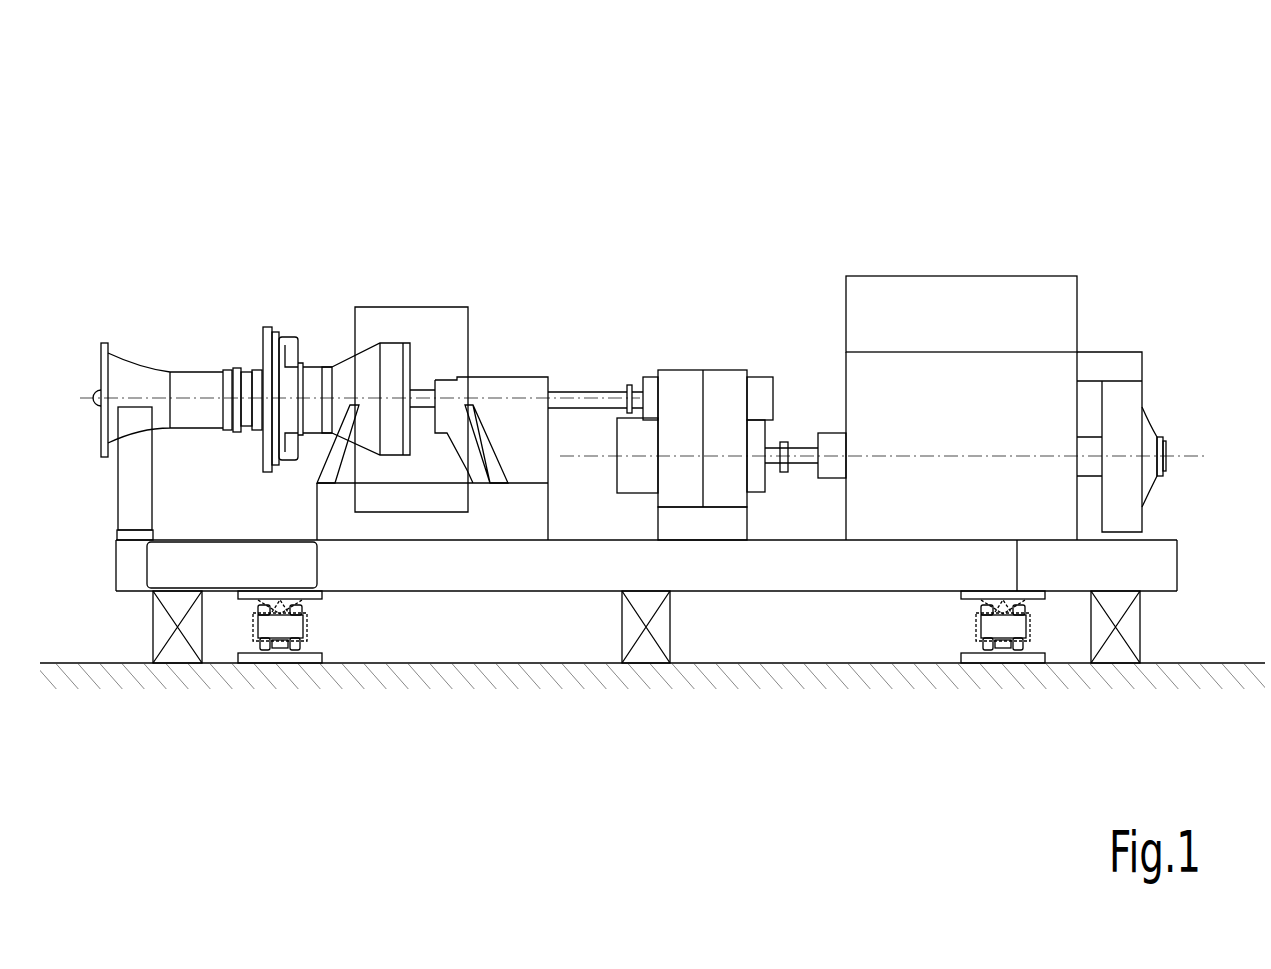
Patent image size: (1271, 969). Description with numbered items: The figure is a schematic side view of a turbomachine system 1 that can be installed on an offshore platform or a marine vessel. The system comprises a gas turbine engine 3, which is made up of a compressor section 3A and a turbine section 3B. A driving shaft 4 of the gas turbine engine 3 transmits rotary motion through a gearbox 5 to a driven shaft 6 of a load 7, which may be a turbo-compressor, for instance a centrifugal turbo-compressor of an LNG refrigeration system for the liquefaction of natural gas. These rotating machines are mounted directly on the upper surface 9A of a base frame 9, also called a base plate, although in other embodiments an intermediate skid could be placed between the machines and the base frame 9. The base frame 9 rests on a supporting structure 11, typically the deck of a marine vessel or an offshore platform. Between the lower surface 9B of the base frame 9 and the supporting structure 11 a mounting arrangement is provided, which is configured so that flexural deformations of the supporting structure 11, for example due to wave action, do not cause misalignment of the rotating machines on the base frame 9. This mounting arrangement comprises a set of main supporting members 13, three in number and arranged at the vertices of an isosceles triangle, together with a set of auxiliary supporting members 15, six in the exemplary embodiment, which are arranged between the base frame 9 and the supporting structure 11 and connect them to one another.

The turbomachine system 1 is at (793, 140).
The gas turbine engine 3 is at (243, 328).
The compressor section 3A is at (140, 382).
The turbine section 3B is at (397, 370).
The driving shaft 4 is at (572, 395).
The gearbox 5 is at (717, 383).
The driven shaft 6 is at (793, 452).
The load 7 is at (1062, 317).
The base frame 9 is at (850, 578).
The upper surface 9A is at (559, 539).
The lower surface 9B is at (459, 592).
The supporting structure 11 is at (838, 703).
The main supporting members 13 is at (310, 628).
The auxiliary supporting members 15 is at (150, 640).